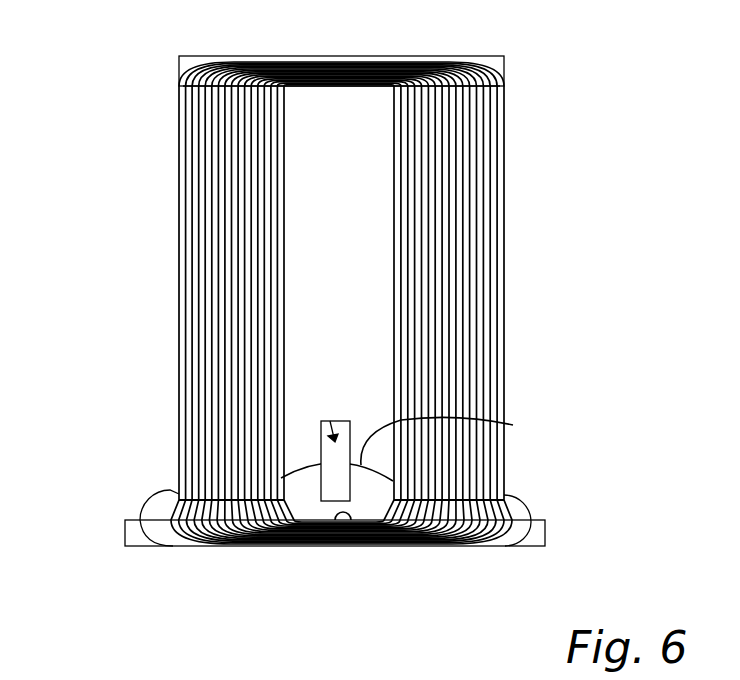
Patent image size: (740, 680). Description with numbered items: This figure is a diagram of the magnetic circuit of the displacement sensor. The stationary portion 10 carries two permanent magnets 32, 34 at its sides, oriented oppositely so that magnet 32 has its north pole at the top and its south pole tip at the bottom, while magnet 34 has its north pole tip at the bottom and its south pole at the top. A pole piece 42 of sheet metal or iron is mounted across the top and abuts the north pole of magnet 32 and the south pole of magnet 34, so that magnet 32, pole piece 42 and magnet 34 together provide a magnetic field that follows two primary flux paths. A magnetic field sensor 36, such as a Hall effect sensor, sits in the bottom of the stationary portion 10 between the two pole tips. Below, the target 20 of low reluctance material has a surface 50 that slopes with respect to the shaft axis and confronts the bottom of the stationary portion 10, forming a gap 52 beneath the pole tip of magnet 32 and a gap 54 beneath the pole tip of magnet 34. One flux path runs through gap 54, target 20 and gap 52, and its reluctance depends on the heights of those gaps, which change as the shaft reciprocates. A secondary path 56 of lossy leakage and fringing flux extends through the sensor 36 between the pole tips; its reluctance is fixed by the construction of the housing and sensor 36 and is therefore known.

The stationary portion 10 is at (128, 36).
The target 20 is at (365, 547).
The permanent magnet 32 is at (500, 100).
The permanent magnet 34 is at (170, 148).
The magnetic field sensor 36 is at (322, 413).
The pole piece 42 is at (312, 50).
The surface 50 is at (327, 512).
The gap 52 is at (498, 491).
The gap 54 is at (142, 490).
The secondary path 56 is at (417, 445).